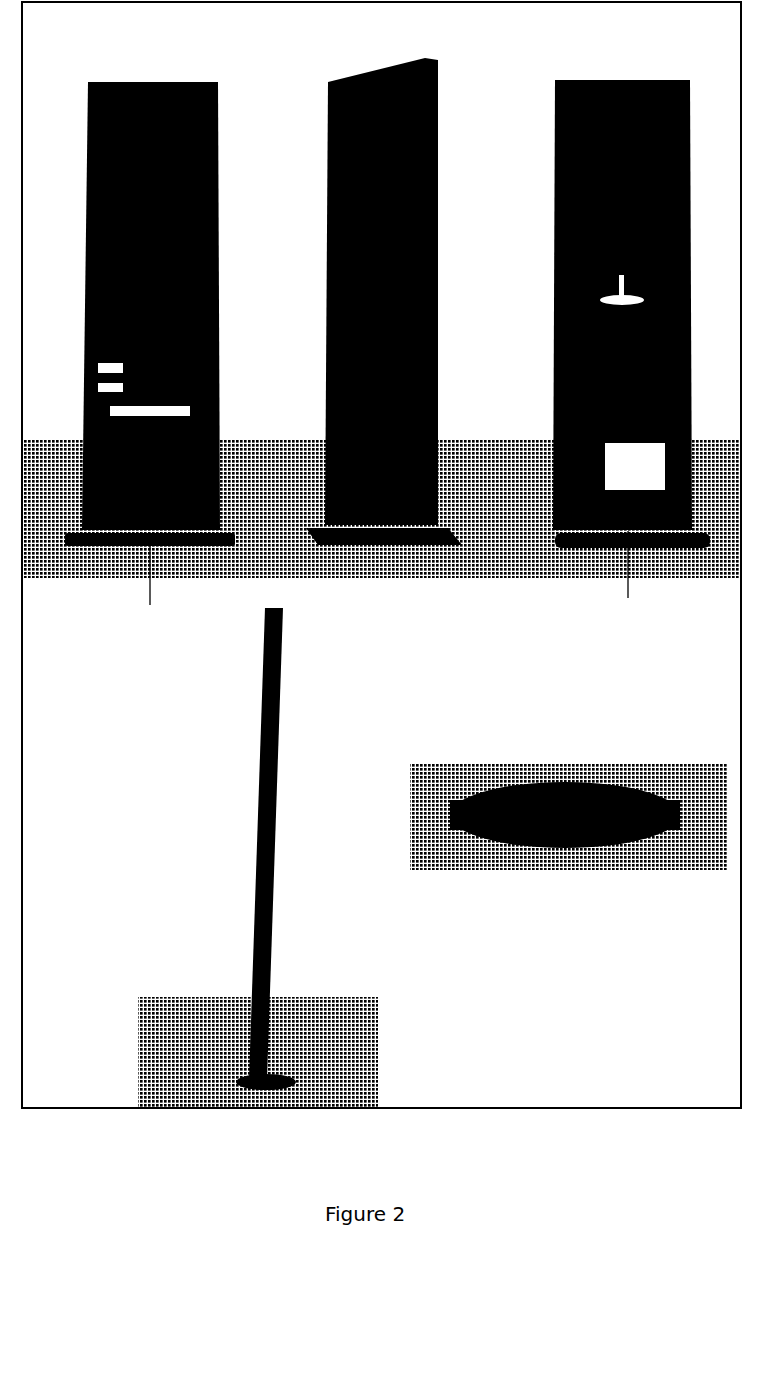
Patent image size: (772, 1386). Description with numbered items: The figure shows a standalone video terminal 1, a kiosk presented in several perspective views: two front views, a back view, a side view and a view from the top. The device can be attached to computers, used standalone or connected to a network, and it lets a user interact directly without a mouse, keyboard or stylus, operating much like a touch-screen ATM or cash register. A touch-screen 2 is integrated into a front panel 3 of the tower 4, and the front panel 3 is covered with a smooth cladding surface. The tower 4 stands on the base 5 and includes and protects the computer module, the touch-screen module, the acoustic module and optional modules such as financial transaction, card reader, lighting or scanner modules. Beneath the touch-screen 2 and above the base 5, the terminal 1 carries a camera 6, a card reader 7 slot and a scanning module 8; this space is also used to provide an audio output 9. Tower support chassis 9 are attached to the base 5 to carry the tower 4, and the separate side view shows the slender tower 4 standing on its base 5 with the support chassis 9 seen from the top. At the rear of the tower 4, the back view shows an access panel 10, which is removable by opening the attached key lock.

The terminal 1 is at (381, 555).
The touch-screen 2 is at (356, 254).
The front panel 3 is at (323, 391).
The tower 4 is at (598, 77).
The base 5 is at (545, 540).
The camera 6 is at (83, 370).
The card reader slot 7 is at (83, 388).
The scanning module 8 is at (83, 411).
The tower support chassis 9 is at (390, 585).
The access panel 10 is at (622, 465).